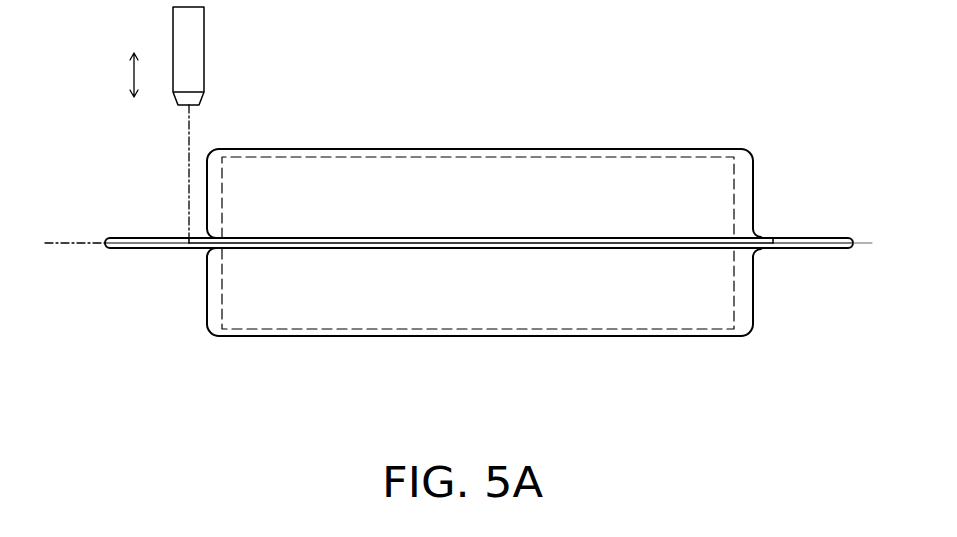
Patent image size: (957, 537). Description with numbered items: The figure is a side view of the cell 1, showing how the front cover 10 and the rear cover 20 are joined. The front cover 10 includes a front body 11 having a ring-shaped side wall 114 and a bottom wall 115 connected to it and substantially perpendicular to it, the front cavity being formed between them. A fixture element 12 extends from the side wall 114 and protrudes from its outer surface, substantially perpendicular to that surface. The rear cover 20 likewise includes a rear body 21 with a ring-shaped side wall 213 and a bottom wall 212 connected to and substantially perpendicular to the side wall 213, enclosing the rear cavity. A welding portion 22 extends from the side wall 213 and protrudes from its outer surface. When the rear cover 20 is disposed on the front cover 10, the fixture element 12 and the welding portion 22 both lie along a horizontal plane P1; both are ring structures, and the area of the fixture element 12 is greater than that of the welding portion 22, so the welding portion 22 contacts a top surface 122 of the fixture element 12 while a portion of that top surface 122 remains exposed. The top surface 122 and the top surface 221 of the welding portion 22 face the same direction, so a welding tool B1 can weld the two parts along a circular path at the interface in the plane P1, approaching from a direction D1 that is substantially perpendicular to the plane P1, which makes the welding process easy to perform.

The cell 1 is at (823, 29).
The front cover 10 is at (593, 43).
The front body 11 is at (332, 338).
The fixture element 12 is at (122, 248).
The side wall 114 is at (216, 287).
The bottom wall 115 is at (482, 337).
The top surface 122 is at (150, 237).
The rear cover 20 is at (721, 43).
The rear body 21 is at (325, 147).
The welding portion 22 is at (192, 249).
The bottom wall 212 is at (483, 148).
The side wall 213 is at (213, 199).
The top surface 221 is at (203, 218).
The laser beam source B1 is at (172, 30).
The direction D1 is at (116, 75).
The plane P1 is at (75, 242).